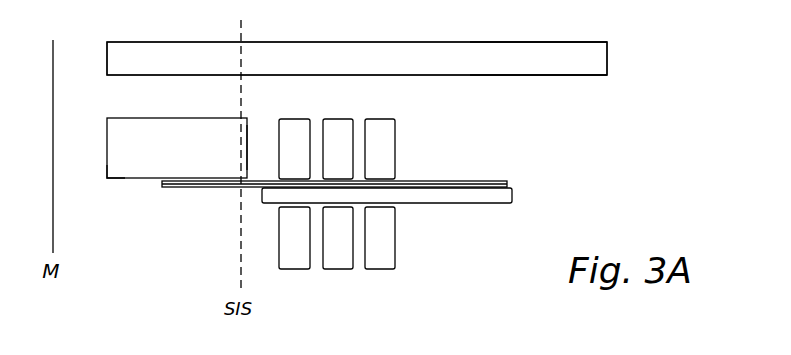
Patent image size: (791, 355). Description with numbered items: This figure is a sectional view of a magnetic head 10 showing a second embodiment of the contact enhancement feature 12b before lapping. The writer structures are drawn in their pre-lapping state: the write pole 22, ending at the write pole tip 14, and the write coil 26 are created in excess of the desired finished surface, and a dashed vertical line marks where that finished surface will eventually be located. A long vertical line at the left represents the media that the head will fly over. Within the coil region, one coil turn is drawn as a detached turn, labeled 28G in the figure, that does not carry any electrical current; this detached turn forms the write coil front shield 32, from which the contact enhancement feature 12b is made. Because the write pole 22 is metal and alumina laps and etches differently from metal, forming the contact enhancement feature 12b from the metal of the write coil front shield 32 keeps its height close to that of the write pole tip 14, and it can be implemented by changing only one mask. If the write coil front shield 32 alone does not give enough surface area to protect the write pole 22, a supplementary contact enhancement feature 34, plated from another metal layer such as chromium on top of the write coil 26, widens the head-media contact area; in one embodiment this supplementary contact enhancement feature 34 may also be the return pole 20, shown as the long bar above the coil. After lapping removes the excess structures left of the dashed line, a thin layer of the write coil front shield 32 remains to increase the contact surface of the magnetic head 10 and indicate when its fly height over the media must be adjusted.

The magnetic head 10 is at (629, 82).
The return pole 20 is at (338, 58).
The supplementary contact enhancement feature 34 is at (479, 60).
The contact enhancement feature 12b is at (133, 117).
The block edge 28G is at (249, 138).
The write coil front shield 32 is at (118, 171).
The write pole tip 14 is at (165, 190).
The write pole 22 is at (197, 188).
The write coil 26 is at (383, 145).